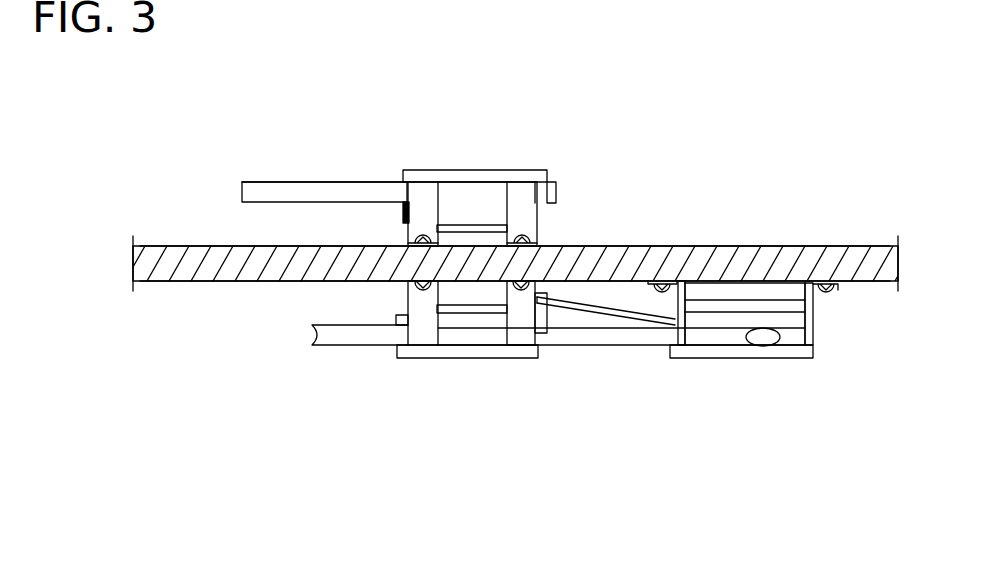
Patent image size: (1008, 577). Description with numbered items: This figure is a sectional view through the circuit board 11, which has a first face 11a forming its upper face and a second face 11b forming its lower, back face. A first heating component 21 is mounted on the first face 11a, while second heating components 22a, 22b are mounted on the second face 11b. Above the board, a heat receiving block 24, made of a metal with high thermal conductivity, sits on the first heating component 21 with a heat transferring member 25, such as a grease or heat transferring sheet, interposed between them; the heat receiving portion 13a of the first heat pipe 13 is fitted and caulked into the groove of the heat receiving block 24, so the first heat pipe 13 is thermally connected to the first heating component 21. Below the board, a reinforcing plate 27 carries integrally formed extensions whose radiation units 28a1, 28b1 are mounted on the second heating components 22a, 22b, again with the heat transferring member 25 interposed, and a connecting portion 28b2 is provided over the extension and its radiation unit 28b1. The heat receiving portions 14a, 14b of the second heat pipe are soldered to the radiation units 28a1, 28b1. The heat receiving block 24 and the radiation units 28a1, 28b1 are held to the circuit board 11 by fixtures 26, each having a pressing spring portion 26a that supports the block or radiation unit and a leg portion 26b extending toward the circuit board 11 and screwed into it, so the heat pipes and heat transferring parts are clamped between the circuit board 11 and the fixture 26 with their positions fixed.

The circuit board 11 is at (655, 262).
The first face 11a is at (265, 243).
The second face 11b is at (293, 282).
The first heat pipe 13 is at (303, 181).
The heat receiving portion 13a is at (388, 195).
The heat receiving portion 14a is at (377, 350).
The heat receiving portion 14b is at (765, 340).
The first heating component 21 is at (537, 232).
The second heating component 22a is at (408, 297).
The second heating component 22b is at (740, 288).
The heat receiving block 24 is at (465, 210).
The heat transferring member 25 is at (420, 230).
The fixture 26 is at (508, 170).
The pressing spring portion 26a is at (543, 180).
The leg portion 26b is at (524, 195).
The reinforcing plate 27 is at (548, 287).
The radiation unit 28a1 is at (478, 328).
The radiation unit 28b1 is at (792, 327).
The connecting portion 28b2 is at (615, 310).